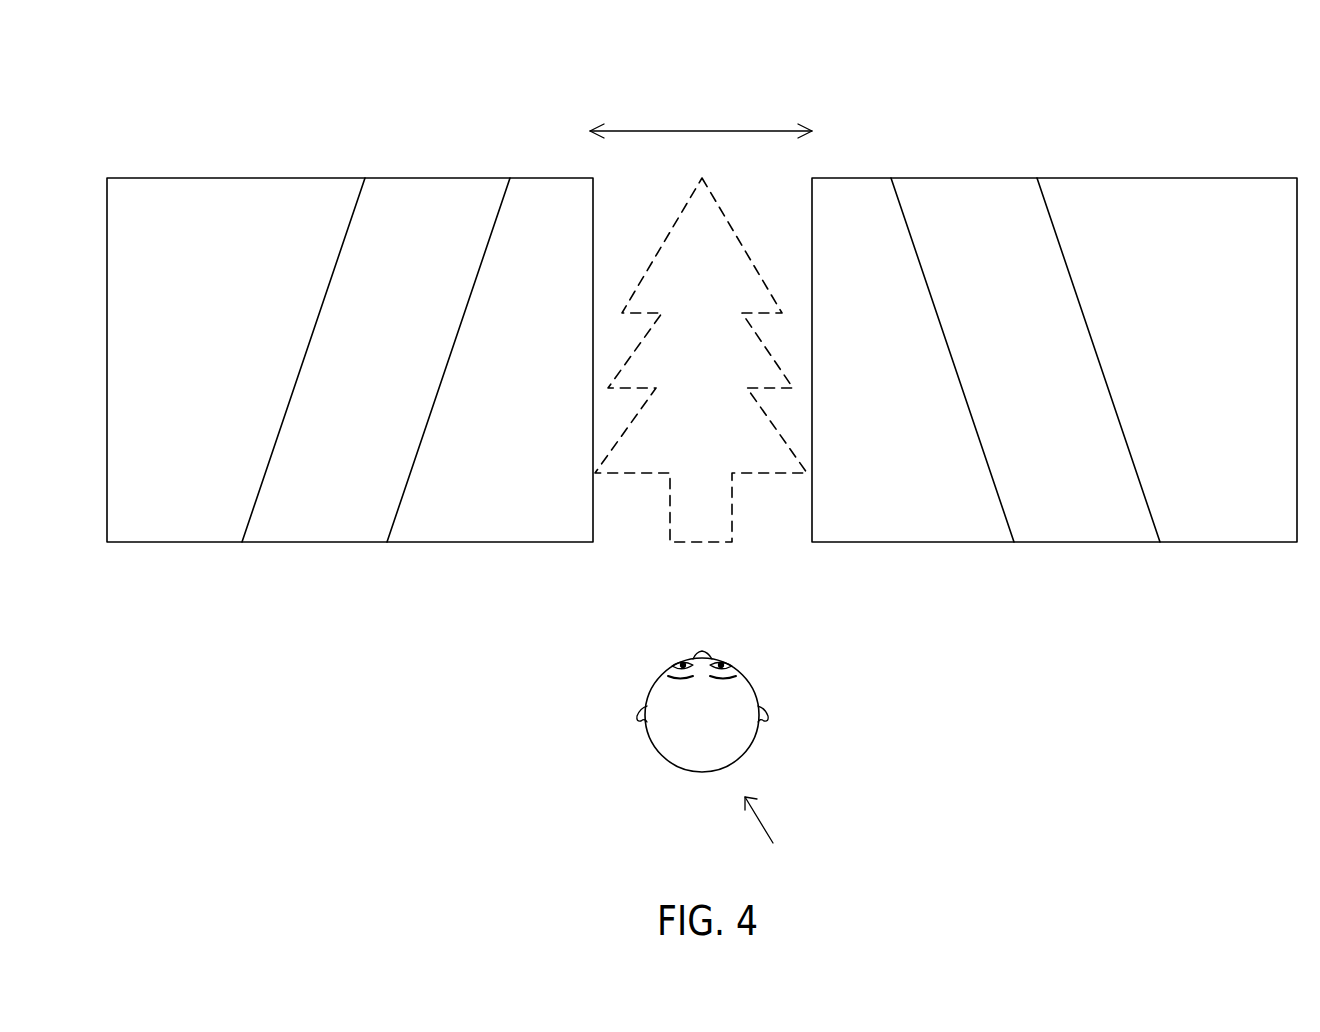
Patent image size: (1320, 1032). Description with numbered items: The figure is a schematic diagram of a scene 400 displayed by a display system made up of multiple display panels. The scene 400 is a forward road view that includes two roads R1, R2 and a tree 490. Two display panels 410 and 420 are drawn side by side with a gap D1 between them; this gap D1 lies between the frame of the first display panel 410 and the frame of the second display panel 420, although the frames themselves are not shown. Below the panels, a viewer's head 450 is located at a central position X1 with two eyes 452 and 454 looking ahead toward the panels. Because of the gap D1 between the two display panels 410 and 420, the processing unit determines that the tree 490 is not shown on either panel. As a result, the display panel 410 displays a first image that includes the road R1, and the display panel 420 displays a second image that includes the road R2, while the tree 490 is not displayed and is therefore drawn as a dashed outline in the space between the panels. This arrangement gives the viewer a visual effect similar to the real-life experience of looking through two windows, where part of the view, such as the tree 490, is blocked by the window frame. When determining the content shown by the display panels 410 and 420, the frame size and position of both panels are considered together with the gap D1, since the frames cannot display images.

The scene 400 is at (1297, 50).
The first display panel 410 is at (350, 308).
The second display panel 420 is at (1054, 308).
The road R1 is at (307, 353).
The road R2 is at (1098, 353).
The gap D1 is at (701, 149).
The tree 490 is at (732, 542).
The viewer's head 450 is at (741, 700).
The eye 452 is at (679, 664).
The eye 454 is at (747, 652).
The central position X1 is at (767, 840).